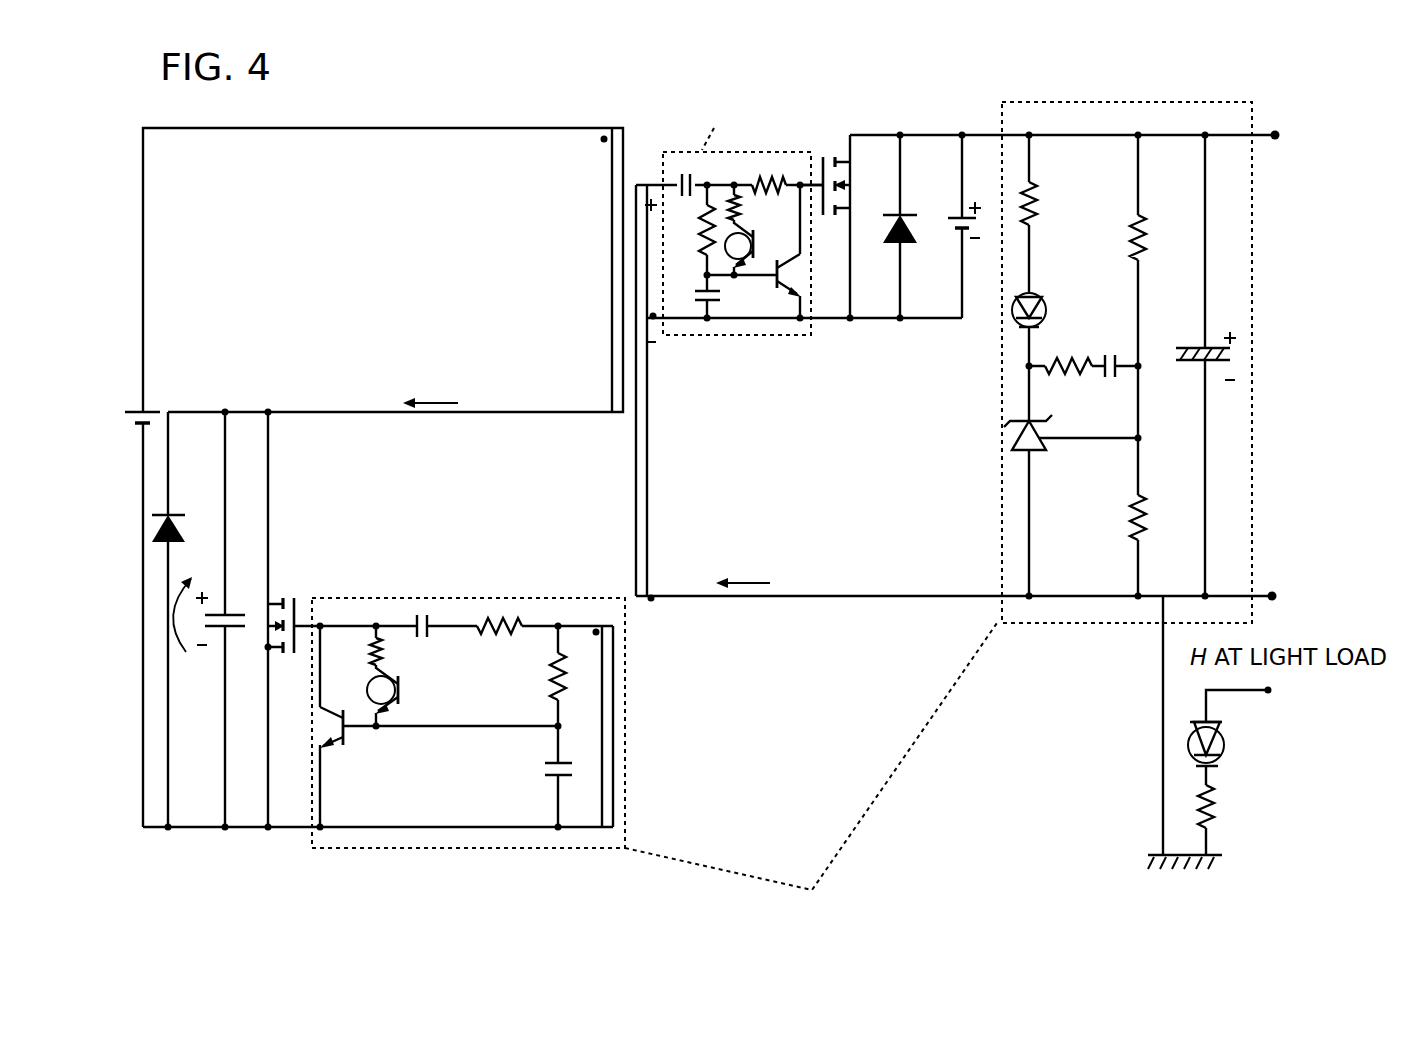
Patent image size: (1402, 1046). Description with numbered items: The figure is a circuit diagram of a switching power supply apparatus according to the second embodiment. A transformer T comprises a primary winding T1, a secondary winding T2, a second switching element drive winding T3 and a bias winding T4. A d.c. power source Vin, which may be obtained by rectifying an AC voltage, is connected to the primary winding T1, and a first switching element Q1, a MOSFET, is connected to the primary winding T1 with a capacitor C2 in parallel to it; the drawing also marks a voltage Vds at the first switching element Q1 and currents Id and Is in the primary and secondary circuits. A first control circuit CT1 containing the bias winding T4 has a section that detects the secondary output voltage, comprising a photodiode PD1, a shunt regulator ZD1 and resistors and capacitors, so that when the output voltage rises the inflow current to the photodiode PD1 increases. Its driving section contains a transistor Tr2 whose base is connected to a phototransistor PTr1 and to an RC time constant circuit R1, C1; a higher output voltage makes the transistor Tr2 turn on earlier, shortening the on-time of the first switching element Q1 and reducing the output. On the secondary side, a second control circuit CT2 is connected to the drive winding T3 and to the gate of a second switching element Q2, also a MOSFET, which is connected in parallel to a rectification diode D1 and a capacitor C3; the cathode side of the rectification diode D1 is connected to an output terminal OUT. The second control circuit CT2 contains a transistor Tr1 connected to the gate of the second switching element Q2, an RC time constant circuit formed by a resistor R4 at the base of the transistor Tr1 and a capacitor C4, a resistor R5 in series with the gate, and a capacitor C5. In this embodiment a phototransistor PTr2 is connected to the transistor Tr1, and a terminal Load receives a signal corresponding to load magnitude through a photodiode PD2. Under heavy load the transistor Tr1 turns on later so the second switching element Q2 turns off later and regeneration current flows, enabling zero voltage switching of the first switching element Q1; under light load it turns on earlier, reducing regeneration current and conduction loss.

The transformer T is at (646, 353).
The primary winding T1 is at (383, 272).
The secondary winding T2 is at (956, 510).
The second switching element drive winding T3 is at (728, 250).
The bias winding T4 is at (604, 715).
The d.c. power source Vin is at (130, 606).
The drain-source voltage / body diode Vds is at (185, 619).
The capacitor C2 is at (231, 619).
The first switching element Q1 is at (287, 619).
The drain current Id is at (444, 401).
The secondary current Is is at (755, 583).
The first control circuit CT1 is at (654, 759).
The second control circuit CT2 is at (737, 219).
The transistor Tr2 is at (345, 741).
The phototransistor PTr1 is at (411, 676).
The resistor R1 is at (541, 676).
The capacitor C1 is at (544, 776).
The capacitor C5 is at (689, 174).
The resistor R5 is at (769, 173).
The resistor R4 is at (692, 238).
The phototransistor PTr2 is at (758, 232).
The capacitor C4 is at (694, 302).
The transistor Tr1 is at (782, 251).
The second switching element Q2 is at (833, 213).
The rectification diode D1 is at (910, 226).
The capacitor C3 is at (955, 226).
The output terminal OUT is at (1302, 136).
The photodiode PD1 is at (1053, 329).
The shunt regulator ZD1 is at (1071, 481).
The terminal Load is at (1268, 700).
The photodiode PD2 is at (1231, 788).